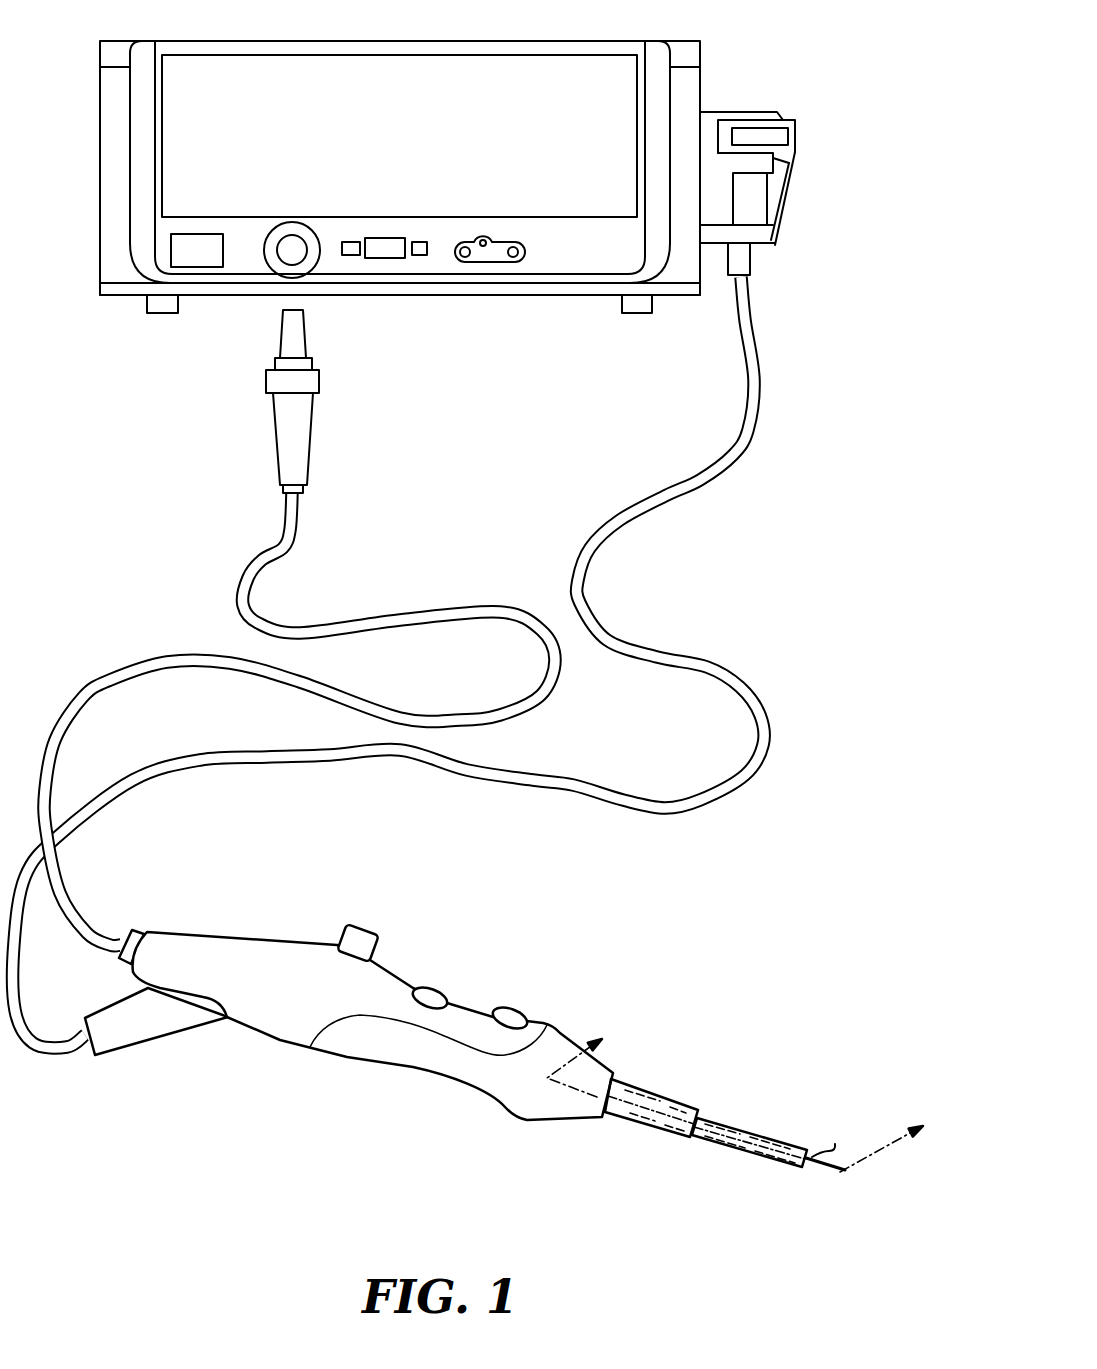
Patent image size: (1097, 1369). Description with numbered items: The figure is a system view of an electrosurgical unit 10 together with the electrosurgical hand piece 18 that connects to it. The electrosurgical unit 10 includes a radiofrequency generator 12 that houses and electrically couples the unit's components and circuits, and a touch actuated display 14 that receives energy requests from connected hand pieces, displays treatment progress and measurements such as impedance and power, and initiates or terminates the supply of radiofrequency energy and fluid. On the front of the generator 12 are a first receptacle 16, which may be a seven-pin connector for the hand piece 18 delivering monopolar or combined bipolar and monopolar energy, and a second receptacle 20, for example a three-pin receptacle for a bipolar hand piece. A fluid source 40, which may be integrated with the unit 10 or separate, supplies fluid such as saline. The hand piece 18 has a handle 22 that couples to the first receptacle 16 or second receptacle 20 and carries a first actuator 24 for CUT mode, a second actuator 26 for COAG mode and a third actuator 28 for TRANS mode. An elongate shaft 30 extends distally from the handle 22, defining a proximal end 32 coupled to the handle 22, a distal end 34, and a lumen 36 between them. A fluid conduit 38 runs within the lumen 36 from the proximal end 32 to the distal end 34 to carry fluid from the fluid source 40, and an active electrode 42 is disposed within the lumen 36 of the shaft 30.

The electrosurgical unit 10 is at (456, 194).
The radiofrequency generator 12 is at (116, 268).
The touch actuated display 14 is at (386, 127).
The first receptacle 16 is at (287, 257).
The electrosurgical hand piece 18 is at (504, 1065).
The second receptacle 20 is at (497, 253).
The handle 22 is at (350, 1062).
The first actuator 24 is at (513, 1010).
The second actuator 26 is at (437, 990).
The third actuator 28 is at (365, 925).
The elongate shaft 30 is at (775, 1141).
The proximal end 32 is at (608, 1117).
The distal end 34 is at (807, 1167).
The lumen 36 is at (713, 1120).
The fluid conduit 38 is at (763, 1137).
The fluid source 40 is at (785, 218).
The active electrode 42 is at (823, 1163).